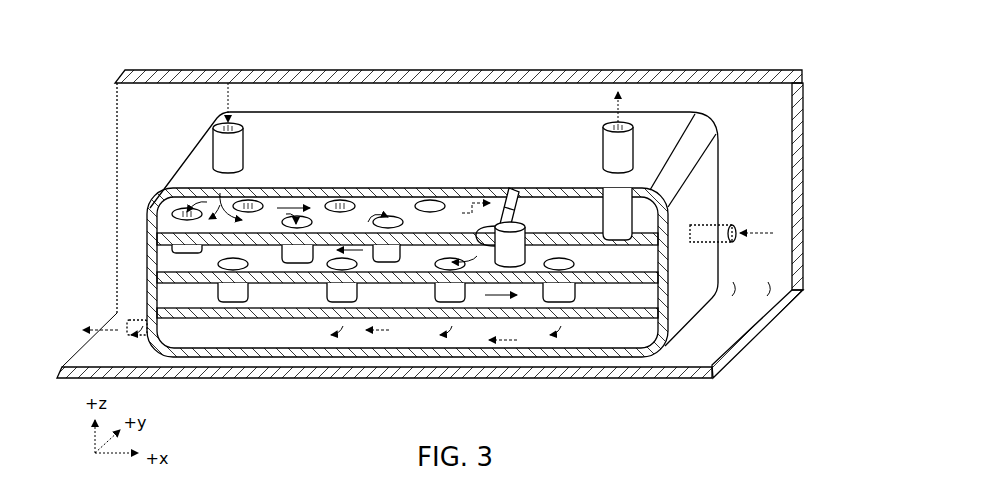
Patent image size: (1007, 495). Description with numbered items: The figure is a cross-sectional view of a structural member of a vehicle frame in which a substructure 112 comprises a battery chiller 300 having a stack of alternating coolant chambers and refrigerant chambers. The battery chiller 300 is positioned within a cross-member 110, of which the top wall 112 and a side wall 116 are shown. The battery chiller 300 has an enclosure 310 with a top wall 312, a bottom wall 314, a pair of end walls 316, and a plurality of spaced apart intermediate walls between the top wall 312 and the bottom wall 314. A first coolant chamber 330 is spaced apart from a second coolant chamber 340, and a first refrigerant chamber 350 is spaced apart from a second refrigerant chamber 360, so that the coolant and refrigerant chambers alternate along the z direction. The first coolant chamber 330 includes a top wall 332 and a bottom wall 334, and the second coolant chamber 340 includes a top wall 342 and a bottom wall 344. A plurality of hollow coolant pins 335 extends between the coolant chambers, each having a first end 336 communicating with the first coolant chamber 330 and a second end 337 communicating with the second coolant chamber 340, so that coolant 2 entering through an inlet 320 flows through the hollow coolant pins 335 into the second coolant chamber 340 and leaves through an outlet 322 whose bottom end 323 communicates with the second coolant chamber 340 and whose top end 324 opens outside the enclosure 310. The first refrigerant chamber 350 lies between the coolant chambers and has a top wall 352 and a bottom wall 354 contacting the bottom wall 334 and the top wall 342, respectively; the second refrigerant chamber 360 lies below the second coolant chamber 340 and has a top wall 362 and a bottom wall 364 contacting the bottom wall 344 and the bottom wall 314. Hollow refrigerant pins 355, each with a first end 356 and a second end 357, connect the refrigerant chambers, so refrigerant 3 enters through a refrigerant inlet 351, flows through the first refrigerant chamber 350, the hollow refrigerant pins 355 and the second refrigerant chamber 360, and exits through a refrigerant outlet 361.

The cross-member 110 is at (454, 194).
The top wall 112 is at (310, 85).
The side wall 116 is at (806, 122).
The battery chiller 300 is at (408, 229).
The enclosure 310 is at (450, 261).
The top wall 312 is at (348, 168).
The bottom wall 314 is at (531, 358).
The end wall 316 is at (708, 168).
The inlet 320 is at (241, 146).
The outlet 322 is at (610, 147).
The bottom end 323 is at (633, 240).
The top end 324 is at (634, 125).
The first coolant chamber 330 is at (262, 192).
The top wall 332 is at (302, 188).
The bottom wall 334 is at (406, 189).
The hollow coolant pin 335 is at (530, 236).
The first end 336 is at (522, 197).
The second end 337 is at (508, 262).
The second coolant chamber 340 is at (352, 273).
The top wall 342 is at (218, 291).
The bottom wall 344 is at (316, 297).
The first refrigerant chamber 350 is at (344, 219).
The refrigerant inlet 351 is at (720, 224).
The top wall 352 is at (222, 250).
The bottom wall 354 is at (282, 273).
The hollow refrigerant pin 355 is at (579, 289).
The first end 356 is at (574, 262).
The second end 357 is at (568, 302).
The second refrigerant chamber 360 is at (303, 327).
The refrigerant outlet 361 is at (137, 337).
The top wall 362 is at (222, 323).
The bottom wall 364 is at (290, 345).
The coolant 2 is at (226, 94).
The refrigerant 3 is at (86, 337).